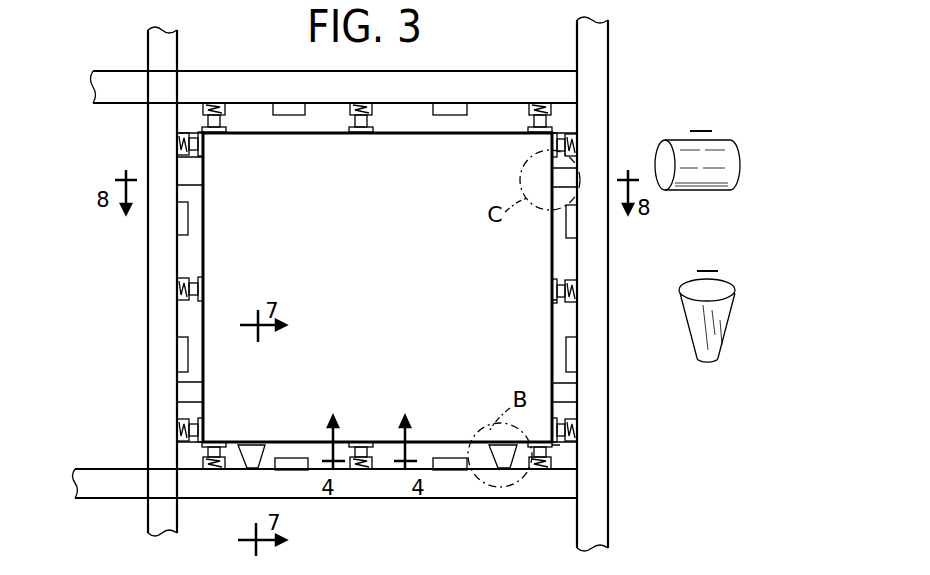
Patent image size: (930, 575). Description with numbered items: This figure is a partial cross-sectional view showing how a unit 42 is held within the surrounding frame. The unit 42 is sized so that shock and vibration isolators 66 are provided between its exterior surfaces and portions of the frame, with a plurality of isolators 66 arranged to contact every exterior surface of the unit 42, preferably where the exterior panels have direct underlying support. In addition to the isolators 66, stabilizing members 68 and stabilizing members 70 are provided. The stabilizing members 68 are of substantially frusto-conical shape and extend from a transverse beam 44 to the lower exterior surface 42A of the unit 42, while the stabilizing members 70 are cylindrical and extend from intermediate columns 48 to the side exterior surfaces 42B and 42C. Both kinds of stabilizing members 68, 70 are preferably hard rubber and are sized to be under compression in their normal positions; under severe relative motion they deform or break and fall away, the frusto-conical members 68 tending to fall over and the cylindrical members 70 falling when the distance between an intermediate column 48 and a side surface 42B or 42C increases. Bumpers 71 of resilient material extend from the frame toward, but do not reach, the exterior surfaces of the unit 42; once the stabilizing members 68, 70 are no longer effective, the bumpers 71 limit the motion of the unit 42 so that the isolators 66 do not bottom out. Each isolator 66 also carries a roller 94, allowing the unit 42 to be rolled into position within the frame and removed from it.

The unit 42 is at (420, 442).
The lower exterior surface 42A is at (430, 442).
The side exterior surface 42B is at (197, 252).
The side exterior surface 42C is at (560, 250).
The transverse beam 44 is at (380, 498).
The intermediate column 48 is at (155, 258).
The shock and vibration isolator 66 is at (213, 103).
The stabilizing member 68 is at (725, 326).
The stabilizing member 70 is at (732, 163).
The bumper 71 is at (290, 103).
The roller 94 is at (577, 300).